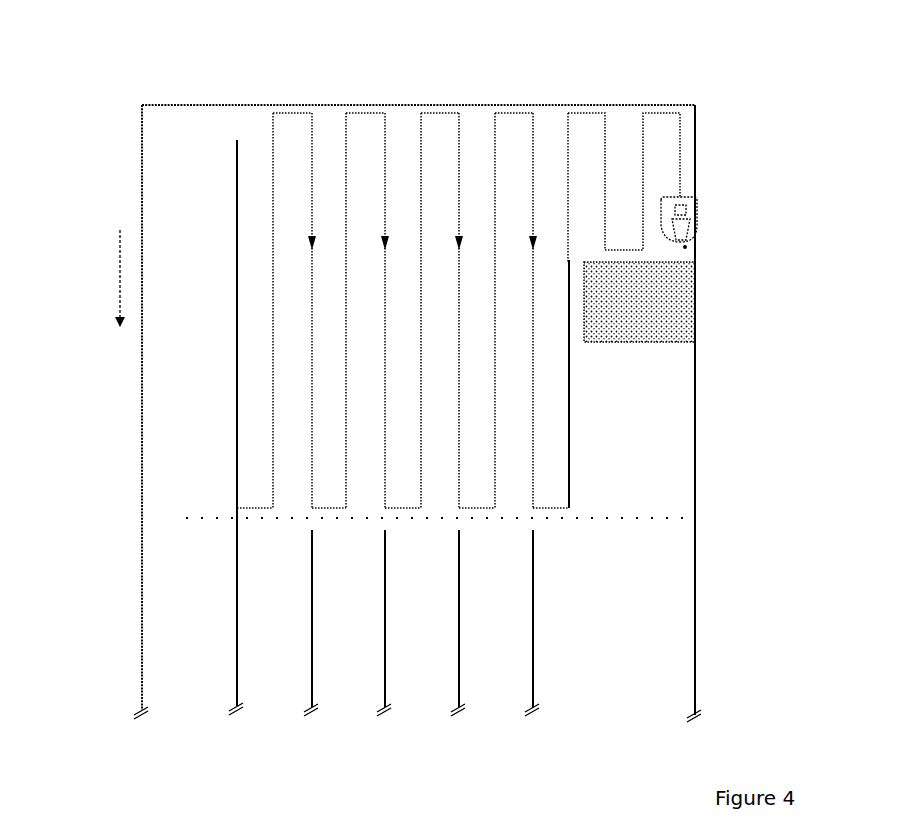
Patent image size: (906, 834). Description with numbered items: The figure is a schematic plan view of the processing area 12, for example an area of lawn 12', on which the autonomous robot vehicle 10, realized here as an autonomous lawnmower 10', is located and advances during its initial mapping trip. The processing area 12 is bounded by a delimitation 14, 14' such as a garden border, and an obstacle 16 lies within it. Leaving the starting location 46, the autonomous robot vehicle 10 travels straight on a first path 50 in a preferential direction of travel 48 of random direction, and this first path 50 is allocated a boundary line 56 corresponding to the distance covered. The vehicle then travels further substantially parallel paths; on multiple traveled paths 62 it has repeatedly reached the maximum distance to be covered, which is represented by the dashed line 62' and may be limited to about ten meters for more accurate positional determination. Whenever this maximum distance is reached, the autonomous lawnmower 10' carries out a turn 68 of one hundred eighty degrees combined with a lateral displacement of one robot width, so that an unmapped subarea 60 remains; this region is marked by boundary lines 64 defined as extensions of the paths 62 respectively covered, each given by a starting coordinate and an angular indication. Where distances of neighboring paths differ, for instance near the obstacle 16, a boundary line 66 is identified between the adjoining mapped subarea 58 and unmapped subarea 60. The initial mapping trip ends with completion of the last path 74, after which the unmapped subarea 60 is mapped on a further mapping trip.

The autonomous robot vehicle 10 is at (725, 202).
The autonomous lawnmower 10' is at (725, 202).
The processing area 12 is at (368, 413).
The area of lawn 12' is at (368, 413).
The delimitation of the processing area 14 is at (418, 76).
The delimitation of the processing area 14' is at (418, 76).
The obstacle 16 is at (653, 311).
The starting location 46 is at (237, 120).
The preferential direction of travel 48 is at (118, 266).
The first path 50 is at (237, 140).
The boundary line 56 is at (237, 383).
The mapped subarea 58 is at (421, 400).
The unmapped subarea 60 is at (210, 308).
The traveled path of maximum distance 62 is at (422, 143).
The dashed line of maximum distance 62' is at (365, 531).
The boundary line 64 is at (237, 678).
The boundary line 66 is at (571, 453).
The 180° turn 68 is at (548, 508).
The last path 74 is at (681, 127).